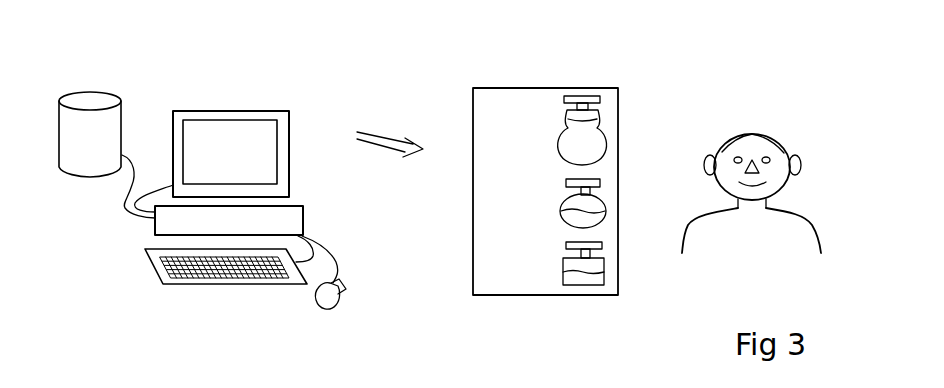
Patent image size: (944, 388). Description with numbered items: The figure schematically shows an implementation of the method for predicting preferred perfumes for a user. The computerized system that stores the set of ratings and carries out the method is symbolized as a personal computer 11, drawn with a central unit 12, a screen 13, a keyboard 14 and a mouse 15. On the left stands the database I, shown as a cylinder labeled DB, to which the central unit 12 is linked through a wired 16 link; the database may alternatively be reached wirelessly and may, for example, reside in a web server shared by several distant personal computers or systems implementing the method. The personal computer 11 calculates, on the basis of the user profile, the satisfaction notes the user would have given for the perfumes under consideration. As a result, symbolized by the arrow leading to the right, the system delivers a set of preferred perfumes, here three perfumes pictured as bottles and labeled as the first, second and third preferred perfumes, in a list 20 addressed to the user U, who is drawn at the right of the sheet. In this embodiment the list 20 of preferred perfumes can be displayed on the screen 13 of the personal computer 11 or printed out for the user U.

The personal computer 11 is at (279, 73).
The central unit 12 is at (303, 222).
The screen 13 is at (290, 116).
The keyboard 14 is at (147, 268).
The mouse 15 is at (335, 305).
The wired link 16 is at (125, 205).
The list 20 is at (570, 88).
The database I is at (59, 155).
The user U is at (803, 218).